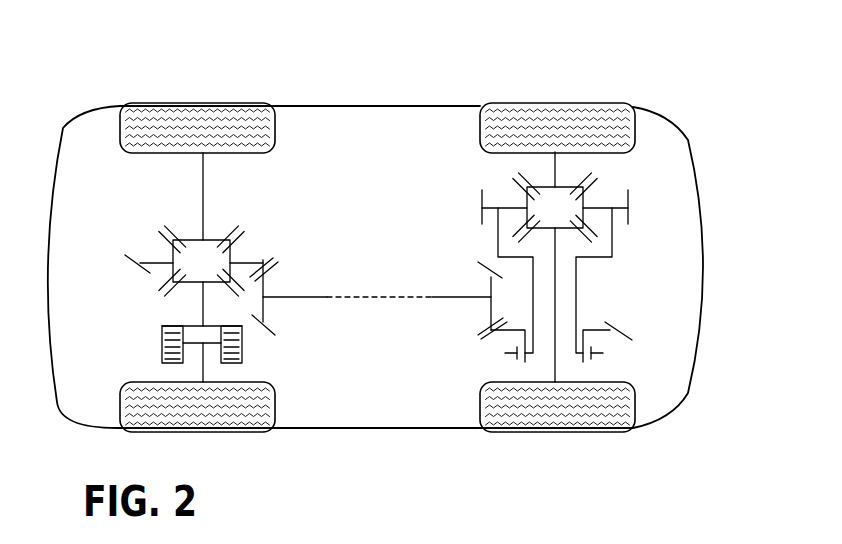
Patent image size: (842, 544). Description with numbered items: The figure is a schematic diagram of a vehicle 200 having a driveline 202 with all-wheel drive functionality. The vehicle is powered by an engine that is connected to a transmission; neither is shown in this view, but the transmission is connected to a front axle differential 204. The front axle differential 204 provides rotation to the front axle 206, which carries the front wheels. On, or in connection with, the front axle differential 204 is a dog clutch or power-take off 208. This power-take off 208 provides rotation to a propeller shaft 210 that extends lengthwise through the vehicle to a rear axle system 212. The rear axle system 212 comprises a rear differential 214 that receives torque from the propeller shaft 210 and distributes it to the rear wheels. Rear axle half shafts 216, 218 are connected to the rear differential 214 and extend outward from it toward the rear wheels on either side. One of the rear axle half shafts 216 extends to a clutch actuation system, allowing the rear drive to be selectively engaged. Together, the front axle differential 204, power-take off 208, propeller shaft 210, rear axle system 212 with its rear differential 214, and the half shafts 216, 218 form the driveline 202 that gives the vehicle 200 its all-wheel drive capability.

The vehicle 200 is at (668, 74).
The driveline 202 is at (383, 254).
The front axle differential 204 is at (590, 194).
The front axle 206 is at (555, 165).
The power-take off 208 is at (621, 356).
The propeller shaft 210 is at (432, 299).
The rear axle system 212 is at (170, 214).
The rear differential 214 is at (128, 272).
The rear axle half shaft 216 is at (202, 306).
The rear axle half shaft 218 is at (203, 197).